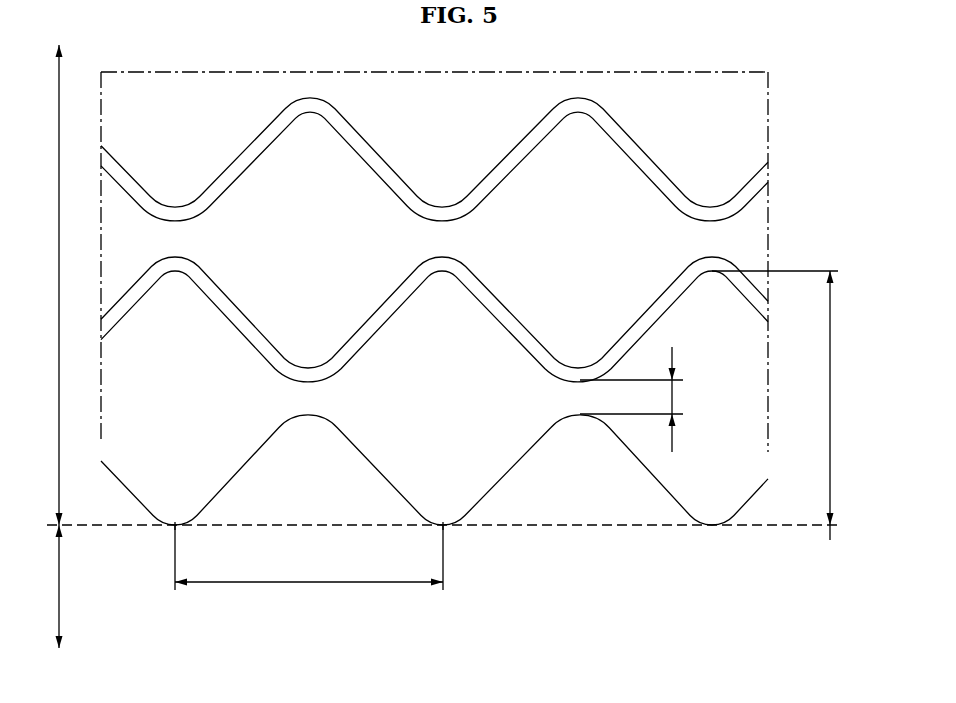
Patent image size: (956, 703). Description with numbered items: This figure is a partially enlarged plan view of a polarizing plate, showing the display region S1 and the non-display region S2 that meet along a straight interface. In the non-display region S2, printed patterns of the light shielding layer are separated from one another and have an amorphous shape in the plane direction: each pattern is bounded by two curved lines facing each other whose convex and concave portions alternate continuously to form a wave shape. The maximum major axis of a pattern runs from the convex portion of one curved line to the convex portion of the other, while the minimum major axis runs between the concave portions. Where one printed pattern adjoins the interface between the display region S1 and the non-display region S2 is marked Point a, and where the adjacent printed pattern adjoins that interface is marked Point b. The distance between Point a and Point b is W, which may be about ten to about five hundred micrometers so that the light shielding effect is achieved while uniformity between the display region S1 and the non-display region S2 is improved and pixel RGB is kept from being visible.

The display region S1 is at (40, 586).
The non-display region S2 is at (40, 285).
The distance between Point a and Point b W is at (309, 557).
The Point a is at (173, 527).
The Point b is at (445, 527).